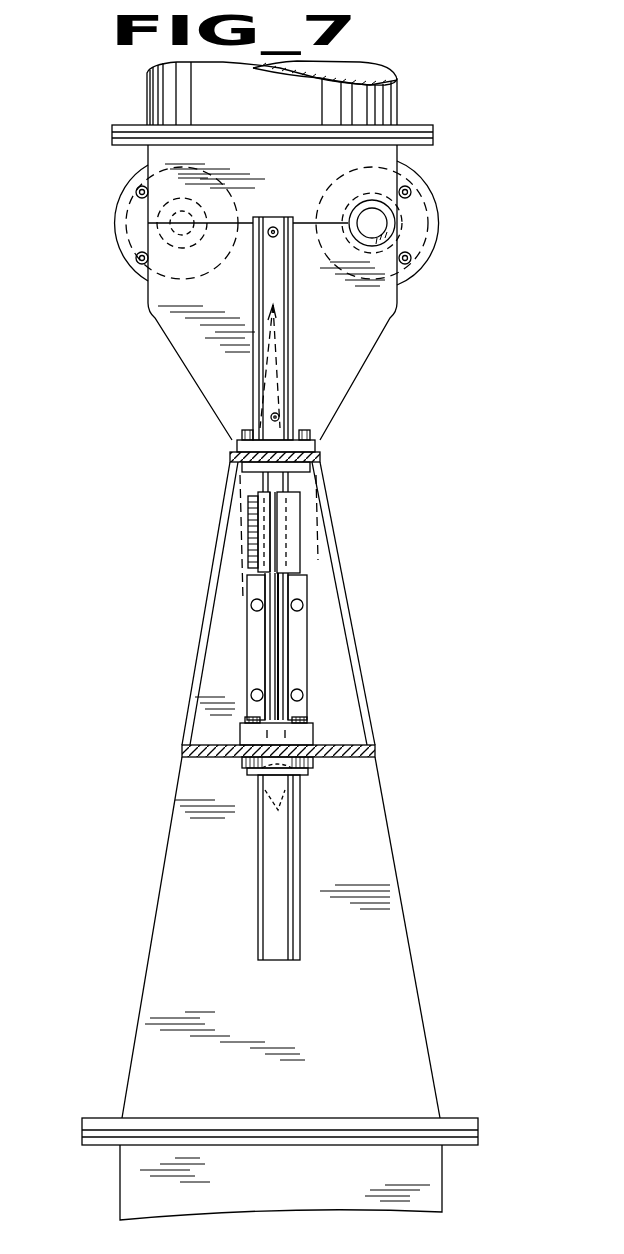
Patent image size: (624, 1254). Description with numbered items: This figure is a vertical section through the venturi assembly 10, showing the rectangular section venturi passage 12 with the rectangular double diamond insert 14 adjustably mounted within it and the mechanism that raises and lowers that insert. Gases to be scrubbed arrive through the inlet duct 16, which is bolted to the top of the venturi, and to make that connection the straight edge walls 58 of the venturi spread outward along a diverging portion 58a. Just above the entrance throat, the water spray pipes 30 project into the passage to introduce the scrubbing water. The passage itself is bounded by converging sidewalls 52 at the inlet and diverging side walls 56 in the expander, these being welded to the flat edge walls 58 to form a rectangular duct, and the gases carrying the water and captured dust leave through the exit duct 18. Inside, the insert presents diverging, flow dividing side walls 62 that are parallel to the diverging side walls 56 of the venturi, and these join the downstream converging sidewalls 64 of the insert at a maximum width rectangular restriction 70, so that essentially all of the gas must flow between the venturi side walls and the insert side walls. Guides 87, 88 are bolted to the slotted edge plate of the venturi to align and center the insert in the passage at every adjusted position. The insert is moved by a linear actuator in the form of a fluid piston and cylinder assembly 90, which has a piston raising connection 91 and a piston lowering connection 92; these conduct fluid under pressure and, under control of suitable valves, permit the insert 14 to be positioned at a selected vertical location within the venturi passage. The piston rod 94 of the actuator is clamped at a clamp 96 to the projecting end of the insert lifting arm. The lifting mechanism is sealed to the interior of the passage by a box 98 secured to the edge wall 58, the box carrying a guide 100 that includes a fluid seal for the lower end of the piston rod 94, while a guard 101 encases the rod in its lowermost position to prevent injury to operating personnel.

The venturi assembly 10 is at (160, 400).
The venturi passage 12 is at (326, 443).
The rectangular double diamond insert 14 is at (315, 520).
The inlet duct 16 is at (147, 92).
The exit duct 18 is at (122, 1173).
The water spray pipes 30 is at (128, 213).
The converging sidewalls 52 is at (205, 412).
The diverging side walls 56 is at (175, 781).
The straight edge walls 58 is at (185, 345).
The diverging portion of edge walls 58a is at (151, 151).
The flow dividing side walls 62 is at (266, 348).
The downstream converging sidewalls 64 is at (238, 573).
The maximum width rectangular restriction 70 is at (330, 530).
The guide 87 is at (250, 636).
The guide 88 is at (297, 622).
The fluid piston and cylinder assembly 90 is at (300, 313).
The piston raising connection 91 is at (278, 414).
The piston lowering connection 92 is at (273, 227).
The piston rod 94 is at (265, 657).
The clamp 96 is at (268, 528).
The box 98 is at (355, 645).
The guide 100 is at (245, 733).
The guard 101 is at (258, 868).